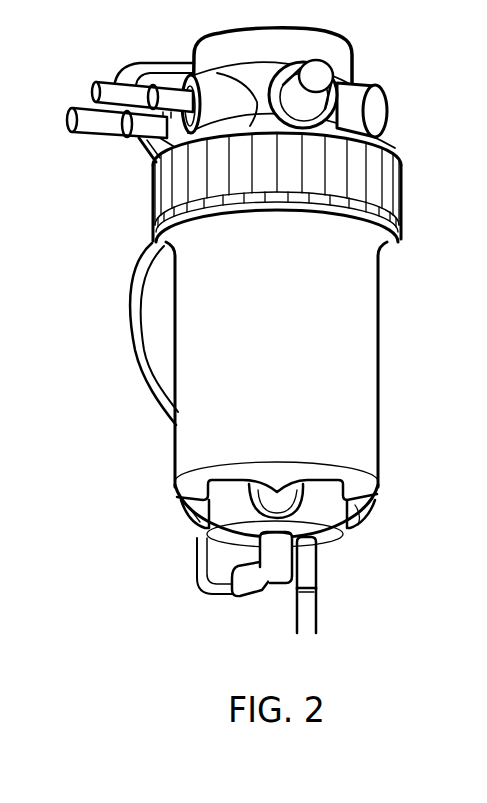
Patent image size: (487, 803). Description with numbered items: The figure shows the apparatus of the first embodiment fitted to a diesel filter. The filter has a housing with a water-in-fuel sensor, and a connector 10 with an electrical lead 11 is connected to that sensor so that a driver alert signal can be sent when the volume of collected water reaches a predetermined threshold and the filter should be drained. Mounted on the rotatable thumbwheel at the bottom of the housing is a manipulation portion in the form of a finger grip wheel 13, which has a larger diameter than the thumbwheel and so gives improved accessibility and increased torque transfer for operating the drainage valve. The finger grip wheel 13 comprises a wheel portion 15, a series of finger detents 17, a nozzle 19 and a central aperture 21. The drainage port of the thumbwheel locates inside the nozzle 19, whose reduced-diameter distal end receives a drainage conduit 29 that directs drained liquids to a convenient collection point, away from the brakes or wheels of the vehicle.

The connector 10 is at (277, 565).
The electrical lead 11 is at (140, 357).
The finger grip wheel 13 is at (393, 518).
The wheel portion 15 is at (230, 540).
The finger detents 17 is at (192, 506).
The nozzle 19 is at (311, 562).
The central aperture 21 is at (273, 533).
The drainage conduit 29 is at (308, 608).